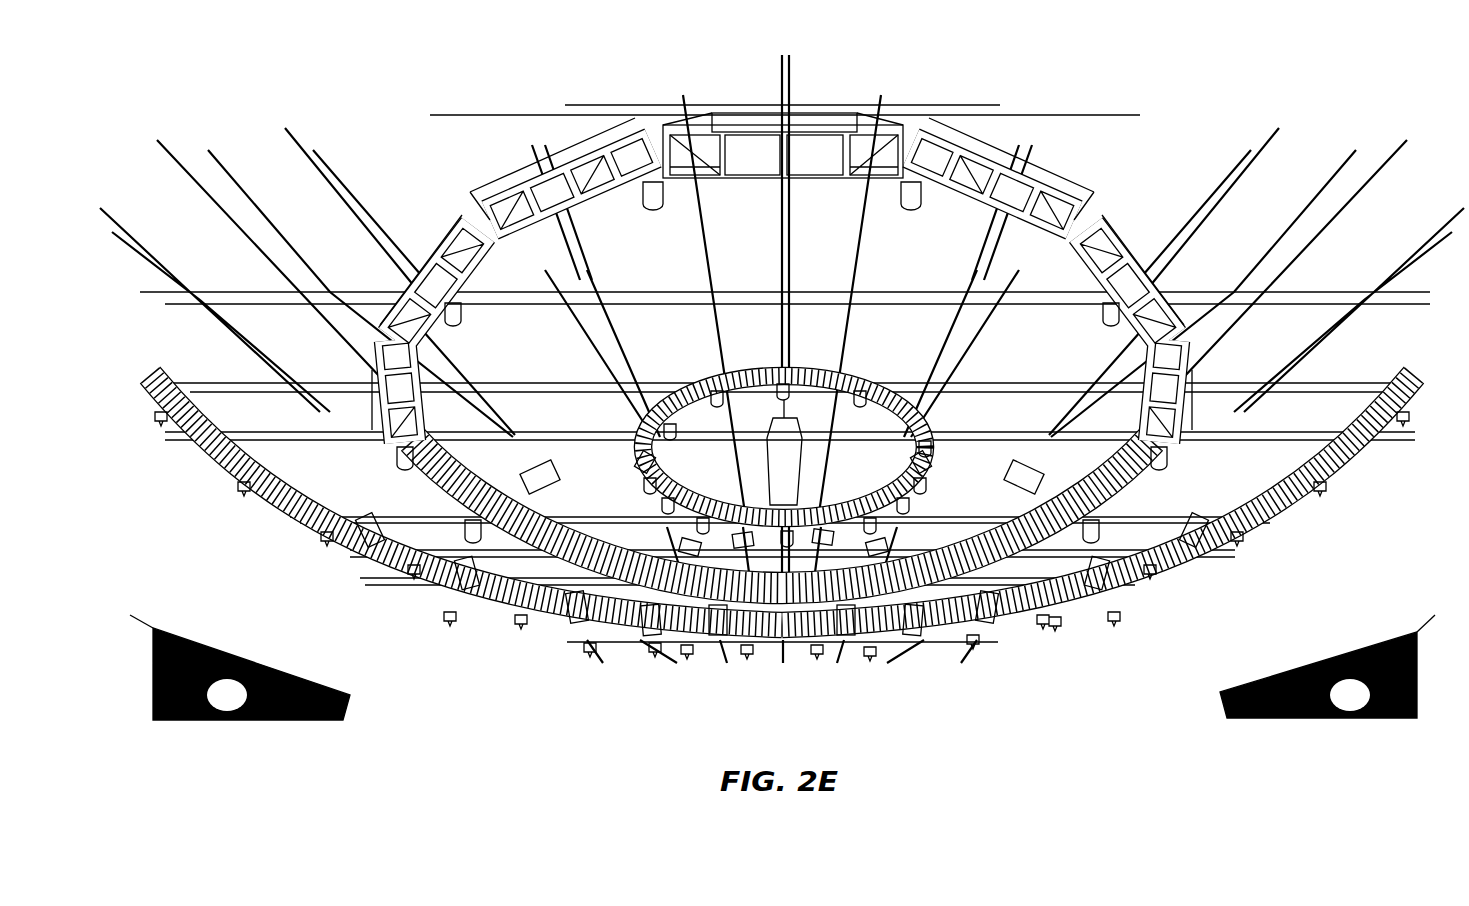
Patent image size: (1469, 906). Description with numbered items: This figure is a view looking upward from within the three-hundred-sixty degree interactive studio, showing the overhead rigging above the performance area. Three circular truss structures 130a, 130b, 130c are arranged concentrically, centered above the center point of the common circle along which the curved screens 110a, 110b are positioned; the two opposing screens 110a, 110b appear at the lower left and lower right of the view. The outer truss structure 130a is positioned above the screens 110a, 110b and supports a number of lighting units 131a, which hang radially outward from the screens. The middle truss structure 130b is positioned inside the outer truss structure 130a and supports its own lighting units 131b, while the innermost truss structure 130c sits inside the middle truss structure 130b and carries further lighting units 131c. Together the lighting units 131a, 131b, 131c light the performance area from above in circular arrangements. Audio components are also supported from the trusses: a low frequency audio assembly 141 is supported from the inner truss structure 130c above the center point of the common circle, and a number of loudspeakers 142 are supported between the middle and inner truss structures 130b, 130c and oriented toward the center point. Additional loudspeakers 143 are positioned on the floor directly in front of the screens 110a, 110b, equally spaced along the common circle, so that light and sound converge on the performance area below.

The curved screen 110a is at (350, 697).
The curved screen 110b is at (1220, 707).
The truss structure 130a is at (210, 457).
The truss structure 130b is at (1140, 365).
The truss structure 130c is at (880, 368).
The lighting units 131a is at (1056, 628).
The lighting units 131b is at (1163, 300).
The lighting units 131c is at (928, 440).
The low frequency audio assembly 141 is at (775, 424).
The loudspeakers 142 is at (664, 536).
The loudspeakers 143 is at (655, 640).